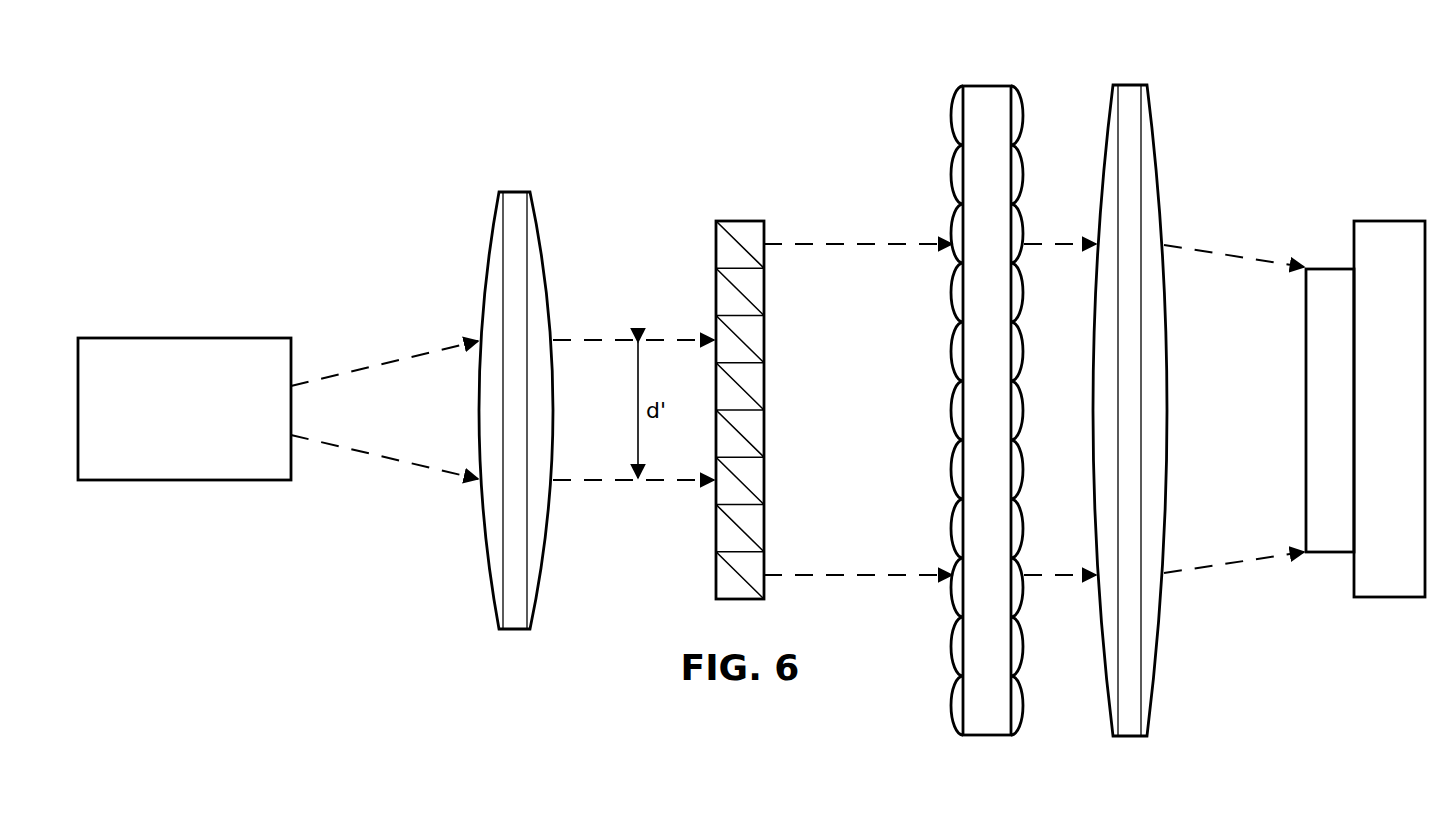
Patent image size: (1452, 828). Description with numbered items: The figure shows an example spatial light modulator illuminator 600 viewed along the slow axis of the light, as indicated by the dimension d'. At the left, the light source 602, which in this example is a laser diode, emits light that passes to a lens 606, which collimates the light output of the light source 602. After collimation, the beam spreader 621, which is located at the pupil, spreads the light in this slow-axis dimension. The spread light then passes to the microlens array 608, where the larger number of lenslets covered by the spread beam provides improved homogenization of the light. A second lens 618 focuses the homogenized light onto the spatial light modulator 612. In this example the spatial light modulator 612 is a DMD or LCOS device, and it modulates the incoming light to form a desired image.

The spatial light modulator illuminator 600 is at (641, 66).
The light source 602 is at (160, 427).
The lens 606 is at (510, 192).
The beam spreader 621 is at (738, 221).
The microlens array 608 is at (988, 86).
The lens 618 is at (1130, 85).
The spatial light modulator 612 is at (1390, 221).